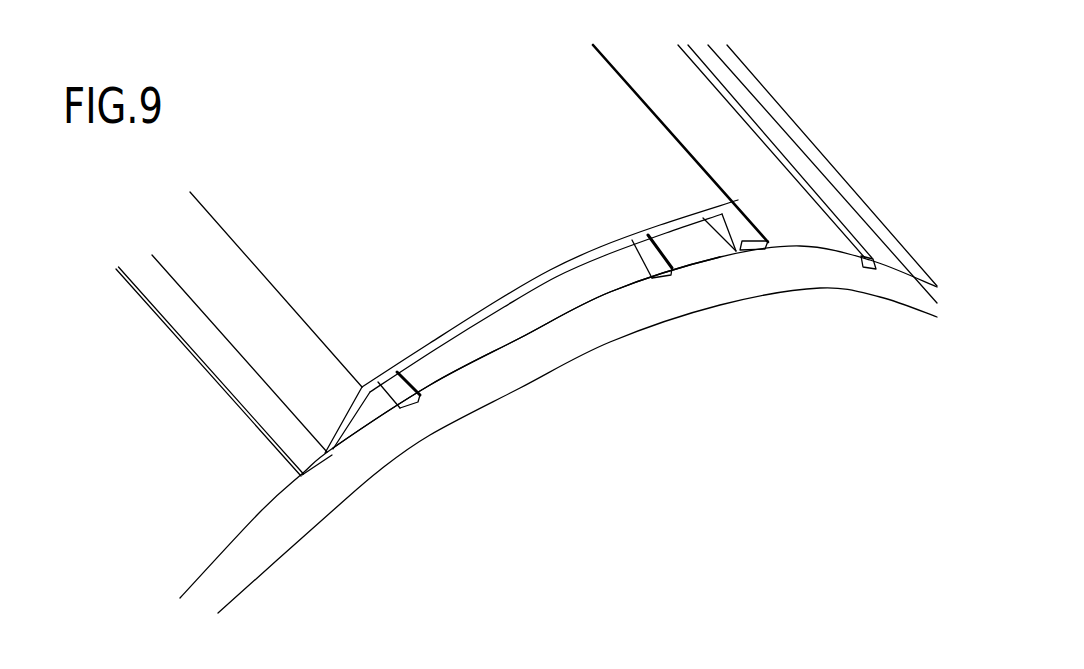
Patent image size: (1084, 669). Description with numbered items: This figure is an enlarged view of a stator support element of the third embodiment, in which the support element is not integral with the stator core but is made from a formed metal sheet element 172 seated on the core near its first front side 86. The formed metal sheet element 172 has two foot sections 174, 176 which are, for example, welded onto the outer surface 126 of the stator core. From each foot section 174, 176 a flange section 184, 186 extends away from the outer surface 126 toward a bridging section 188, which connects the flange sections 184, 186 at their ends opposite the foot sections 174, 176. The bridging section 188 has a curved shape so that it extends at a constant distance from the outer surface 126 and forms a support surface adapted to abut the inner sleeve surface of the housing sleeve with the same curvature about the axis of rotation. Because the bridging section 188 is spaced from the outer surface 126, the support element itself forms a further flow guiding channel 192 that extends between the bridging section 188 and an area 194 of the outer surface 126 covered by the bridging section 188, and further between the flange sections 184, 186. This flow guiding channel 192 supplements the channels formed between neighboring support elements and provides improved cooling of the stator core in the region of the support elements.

The formed metal sheet element 172 is at (395, 232).
The bridging section 188 is at (483, 228).
The flange section 186 is at (736, 228).
The flange section 184 is at (327, 413).
The foot section 174 is at (313, 470).
The outer surface 126 is at (197, 556).
The first front side 86 is at (420, 415).
The area of outer surface 194 is at (538, 302).
The flow guiding channel 192 is at (613, 270).
The foot section 176 is at (755, 250).